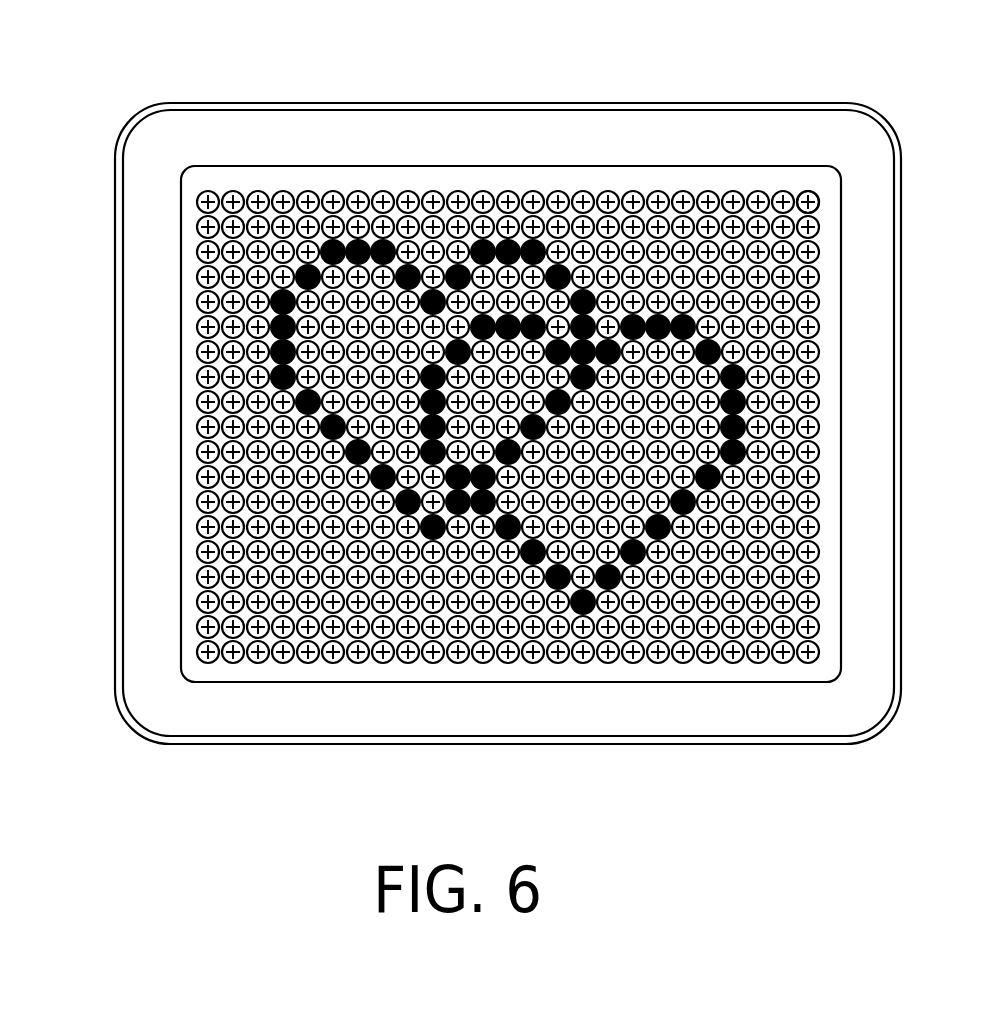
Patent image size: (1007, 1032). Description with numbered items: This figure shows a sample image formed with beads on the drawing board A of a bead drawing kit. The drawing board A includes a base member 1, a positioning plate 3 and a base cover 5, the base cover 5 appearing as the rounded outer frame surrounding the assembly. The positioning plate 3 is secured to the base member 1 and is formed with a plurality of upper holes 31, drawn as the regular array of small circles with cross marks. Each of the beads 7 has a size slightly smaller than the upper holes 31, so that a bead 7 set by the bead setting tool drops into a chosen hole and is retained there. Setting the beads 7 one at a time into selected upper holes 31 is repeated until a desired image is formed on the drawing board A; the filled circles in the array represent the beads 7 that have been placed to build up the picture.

The base member 1 is at (863, 362).
The positioning plate 3 is at (830, 234).
The base cover 5 is at (848, 106).
The beads 7 is at (745, 372).
The upper holes 31 is at (818, 188).
The drawing board A is at (874, 723).